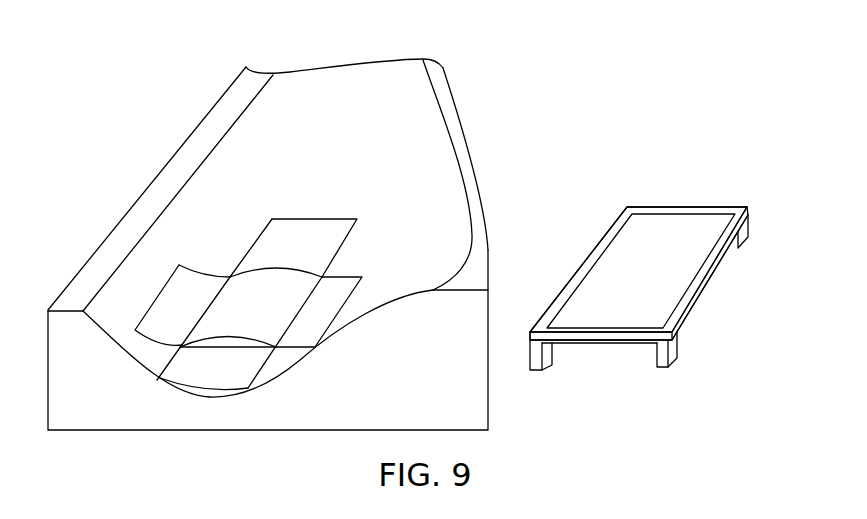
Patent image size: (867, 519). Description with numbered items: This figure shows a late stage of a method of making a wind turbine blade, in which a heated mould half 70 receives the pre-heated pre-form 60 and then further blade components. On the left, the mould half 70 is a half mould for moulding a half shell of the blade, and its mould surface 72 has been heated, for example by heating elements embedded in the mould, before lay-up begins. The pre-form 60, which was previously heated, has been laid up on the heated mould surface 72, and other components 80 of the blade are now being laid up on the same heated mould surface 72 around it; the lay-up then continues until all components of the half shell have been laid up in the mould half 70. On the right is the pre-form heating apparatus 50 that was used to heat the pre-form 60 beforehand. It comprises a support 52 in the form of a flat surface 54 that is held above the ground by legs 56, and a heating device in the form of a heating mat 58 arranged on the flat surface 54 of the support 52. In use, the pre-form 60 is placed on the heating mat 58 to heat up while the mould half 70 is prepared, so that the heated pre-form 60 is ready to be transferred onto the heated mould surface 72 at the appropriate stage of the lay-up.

The pre-form heating apparatus 50 is at (616, 168).
The support 52 is at (751, 290).
The flat surface 54 is at (645, 213).
The legs 56 is at (750, 225).
The heating mat 58 is at (713, 227).
The pre-form 60 is at (246, 309).
The mould half 70 is at (215, 180).
The mould surface 72 is at (330, 77).
The other components 80 is at (265, 250).